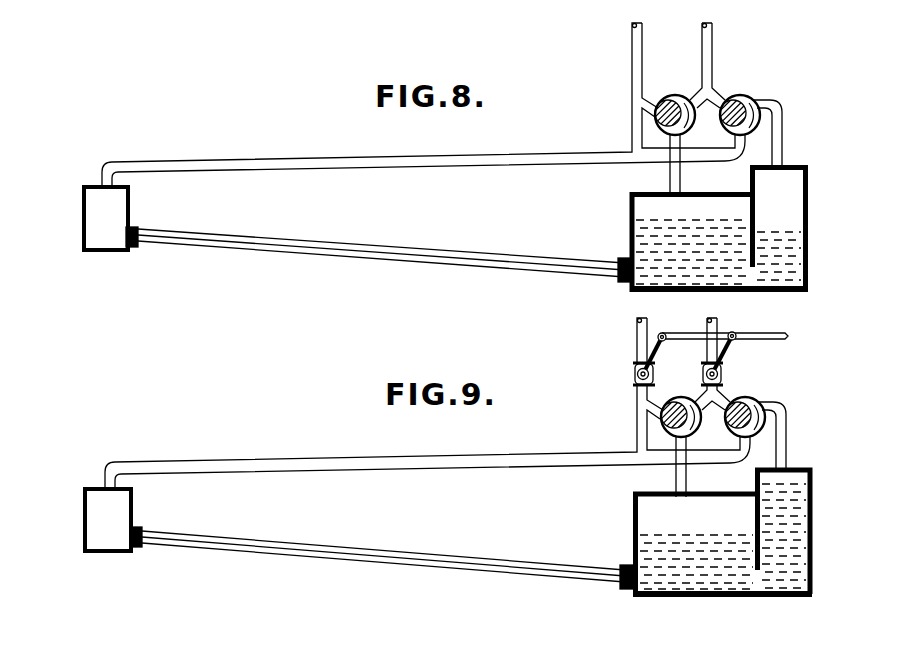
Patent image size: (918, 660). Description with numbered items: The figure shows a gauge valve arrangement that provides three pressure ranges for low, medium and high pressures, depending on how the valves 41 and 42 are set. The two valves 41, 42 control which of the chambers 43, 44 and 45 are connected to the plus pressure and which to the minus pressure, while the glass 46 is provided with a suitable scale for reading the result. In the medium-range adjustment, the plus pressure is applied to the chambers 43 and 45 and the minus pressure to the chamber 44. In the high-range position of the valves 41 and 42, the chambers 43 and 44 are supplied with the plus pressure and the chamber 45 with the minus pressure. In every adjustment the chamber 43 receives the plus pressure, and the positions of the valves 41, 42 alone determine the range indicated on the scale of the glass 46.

In FIG. 8, the valve 41 is at (656, 125).
In FIG. 9, the valve 41 is at (661, 425).
In FIG. 8, the valve 42 is at (762, 123).
In FIG. 9, the valve 42 is at (765, 423).
In FIG. 8, the chamber 43 is at (98, 218).
In FIG. 9, the chamber 43 is at (97, 516).
In FIG. 8, the chamber 44 is at (640, 210).
In FIG. 9, the chamber 44 is at (645, 512).
In FIG. 8, the chamber 45 is at (790, 205).
In FIG. 9, the chamber 45 is at (785, 510).
In FIG. 8, the glass 46 is at (305, 245).
In FIG. 9, the glass 46 is at (223, 527).